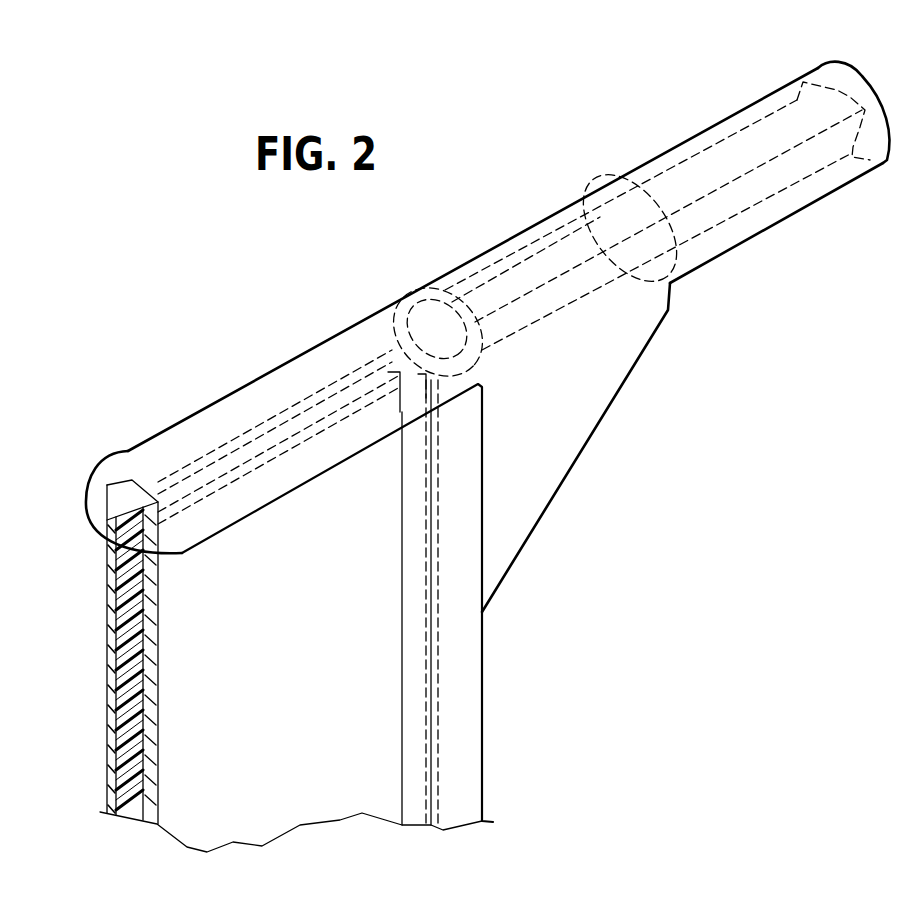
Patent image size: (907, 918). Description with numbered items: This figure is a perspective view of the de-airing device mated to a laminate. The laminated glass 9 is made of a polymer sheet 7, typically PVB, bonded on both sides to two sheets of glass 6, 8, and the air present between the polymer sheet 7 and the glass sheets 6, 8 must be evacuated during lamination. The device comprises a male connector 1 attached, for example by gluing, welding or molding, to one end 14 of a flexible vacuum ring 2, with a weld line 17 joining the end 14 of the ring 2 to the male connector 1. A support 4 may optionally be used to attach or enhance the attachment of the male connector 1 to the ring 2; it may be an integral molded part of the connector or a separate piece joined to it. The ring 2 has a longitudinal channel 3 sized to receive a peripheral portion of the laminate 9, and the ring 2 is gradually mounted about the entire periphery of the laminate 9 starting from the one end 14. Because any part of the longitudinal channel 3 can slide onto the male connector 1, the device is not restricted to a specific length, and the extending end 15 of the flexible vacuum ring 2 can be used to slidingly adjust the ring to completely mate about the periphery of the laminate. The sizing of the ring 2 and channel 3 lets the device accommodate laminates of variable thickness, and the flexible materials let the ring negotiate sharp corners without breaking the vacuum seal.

The male connector 1 is at (463, 457).
The flexible vacuum ring 2 is at (95, 467).
The longitudinal channel 3 is at (398, 377).
The support 4 is at (580, 452).
The sheet of glass 6 is at (292, 418).
The polymer sheet 7 is at (333, 407).
The sheet of glass 8 is at (237, 490).
The laminated glass 9 is at (385, 760).
The end of the flexible vacuum ring 14 is at (412, 509).
The extending end of the flexible vacuum ring 15 is at (745, 104).
The weld line 17 is at (467, 625).